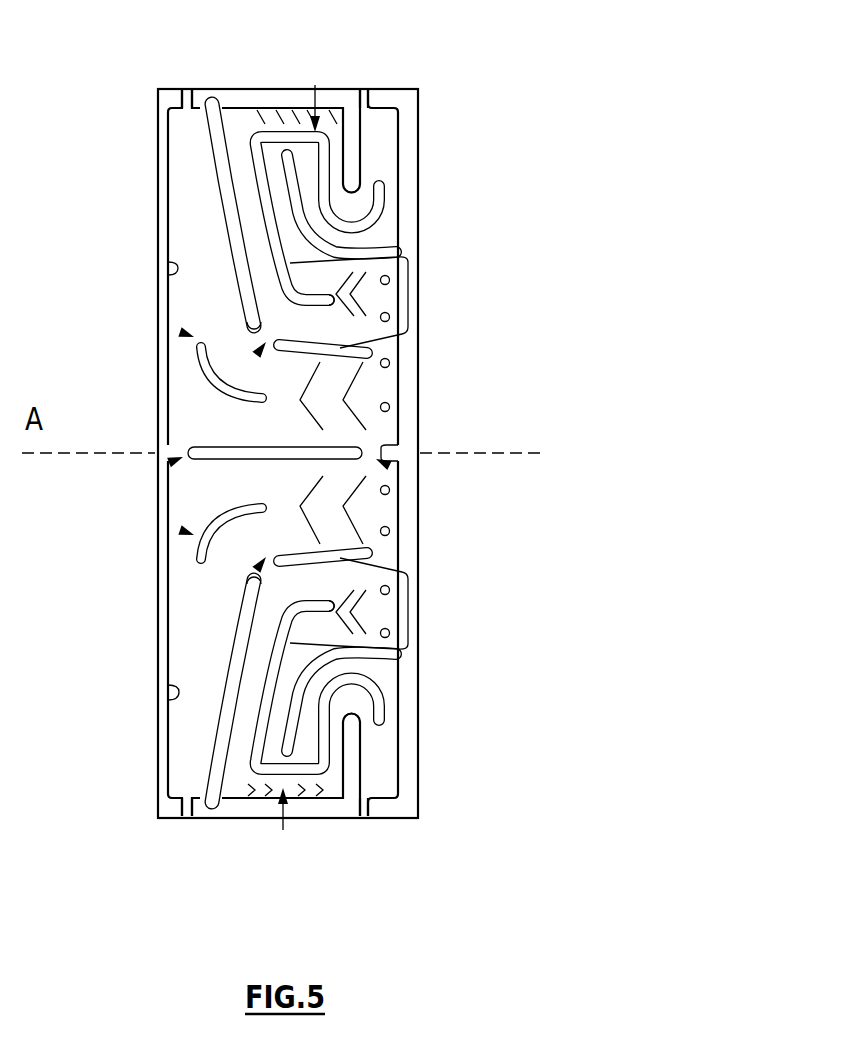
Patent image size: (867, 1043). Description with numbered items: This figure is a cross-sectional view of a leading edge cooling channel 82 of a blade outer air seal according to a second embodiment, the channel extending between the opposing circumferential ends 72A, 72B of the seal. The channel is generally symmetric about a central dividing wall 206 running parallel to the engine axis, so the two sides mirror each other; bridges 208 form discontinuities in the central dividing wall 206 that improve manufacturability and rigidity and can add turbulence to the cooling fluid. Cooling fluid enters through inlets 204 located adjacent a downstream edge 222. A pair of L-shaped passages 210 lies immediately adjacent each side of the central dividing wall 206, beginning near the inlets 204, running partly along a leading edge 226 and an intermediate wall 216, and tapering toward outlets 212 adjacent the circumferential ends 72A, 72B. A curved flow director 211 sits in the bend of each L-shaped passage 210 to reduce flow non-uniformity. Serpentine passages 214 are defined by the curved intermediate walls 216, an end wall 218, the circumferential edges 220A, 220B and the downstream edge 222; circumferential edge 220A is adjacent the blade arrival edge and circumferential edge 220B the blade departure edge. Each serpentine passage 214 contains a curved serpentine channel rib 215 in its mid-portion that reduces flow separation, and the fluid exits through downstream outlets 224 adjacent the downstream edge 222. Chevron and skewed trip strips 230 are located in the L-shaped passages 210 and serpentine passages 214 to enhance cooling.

The circumferential end 72A is at (346, 820).
The circumferential end 72B is at (270, 88).
The leading edge cooling channel 82 is at (180, 165).
The inlets 204 is at (390, 281).
The central dividing wall 206 is at (228, 455).
The bridges 208 is at (256, 350).
The L-shaped passages 210 is at (182, 333).
The flow director 211 is at (226, 362).
The outlets 212 is at (186, 88).
The serpentine passages 214 is at (315, 85).
The serpentine channel rib 215 is at (296, 298).
The intermediate wall 216 is at (228, 210).
The end wall 218 is at (355, 147).
The circumferential edge 220A is at (297, 820).
The circumferential edge 220B is at (235, 106).
The downstream edge 222 is at (398, 178).
The downstream outlets 224 is at (363, 92).
The leading edge 226 is at (172, 268).
The trip strips 230 is at (228, 128).